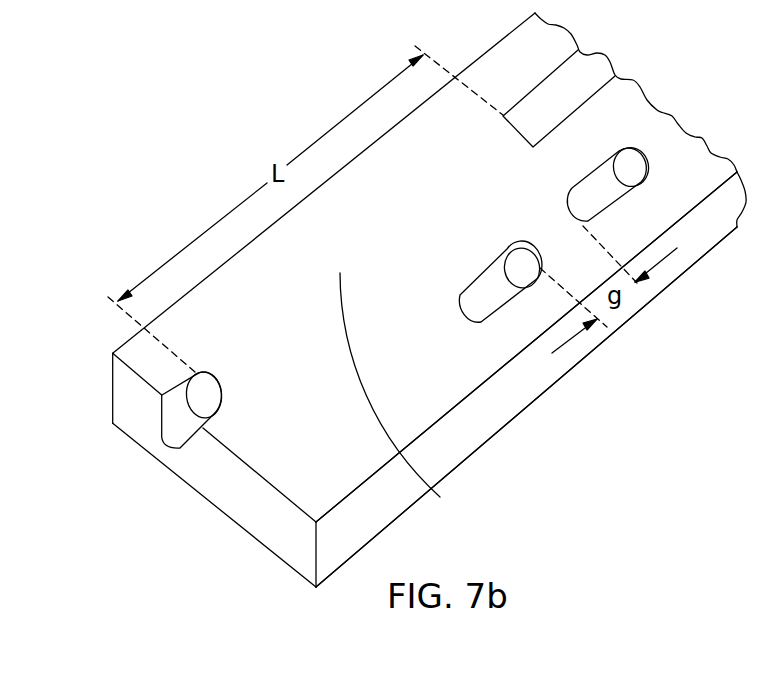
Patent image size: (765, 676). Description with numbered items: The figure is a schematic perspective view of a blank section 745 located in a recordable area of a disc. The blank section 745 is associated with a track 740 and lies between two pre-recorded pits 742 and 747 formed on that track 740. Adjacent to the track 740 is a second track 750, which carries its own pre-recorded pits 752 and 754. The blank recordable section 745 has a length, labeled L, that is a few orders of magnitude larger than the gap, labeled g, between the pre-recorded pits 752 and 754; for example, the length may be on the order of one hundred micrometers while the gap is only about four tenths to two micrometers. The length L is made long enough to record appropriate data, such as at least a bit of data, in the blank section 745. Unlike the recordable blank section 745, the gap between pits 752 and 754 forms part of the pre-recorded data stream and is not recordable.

The track 740 is at (144, 473).
The pre-recorded pit 742 is at (221, 388).
The blank section 745 is at (440, 497).
The pre-recorded pit 747 is at (607, 53).
The track 750 is at (287, 468).
The pre-recorded pit 752 is at (459, 308).
The pre-recorded pit 754 is at (577, 187).